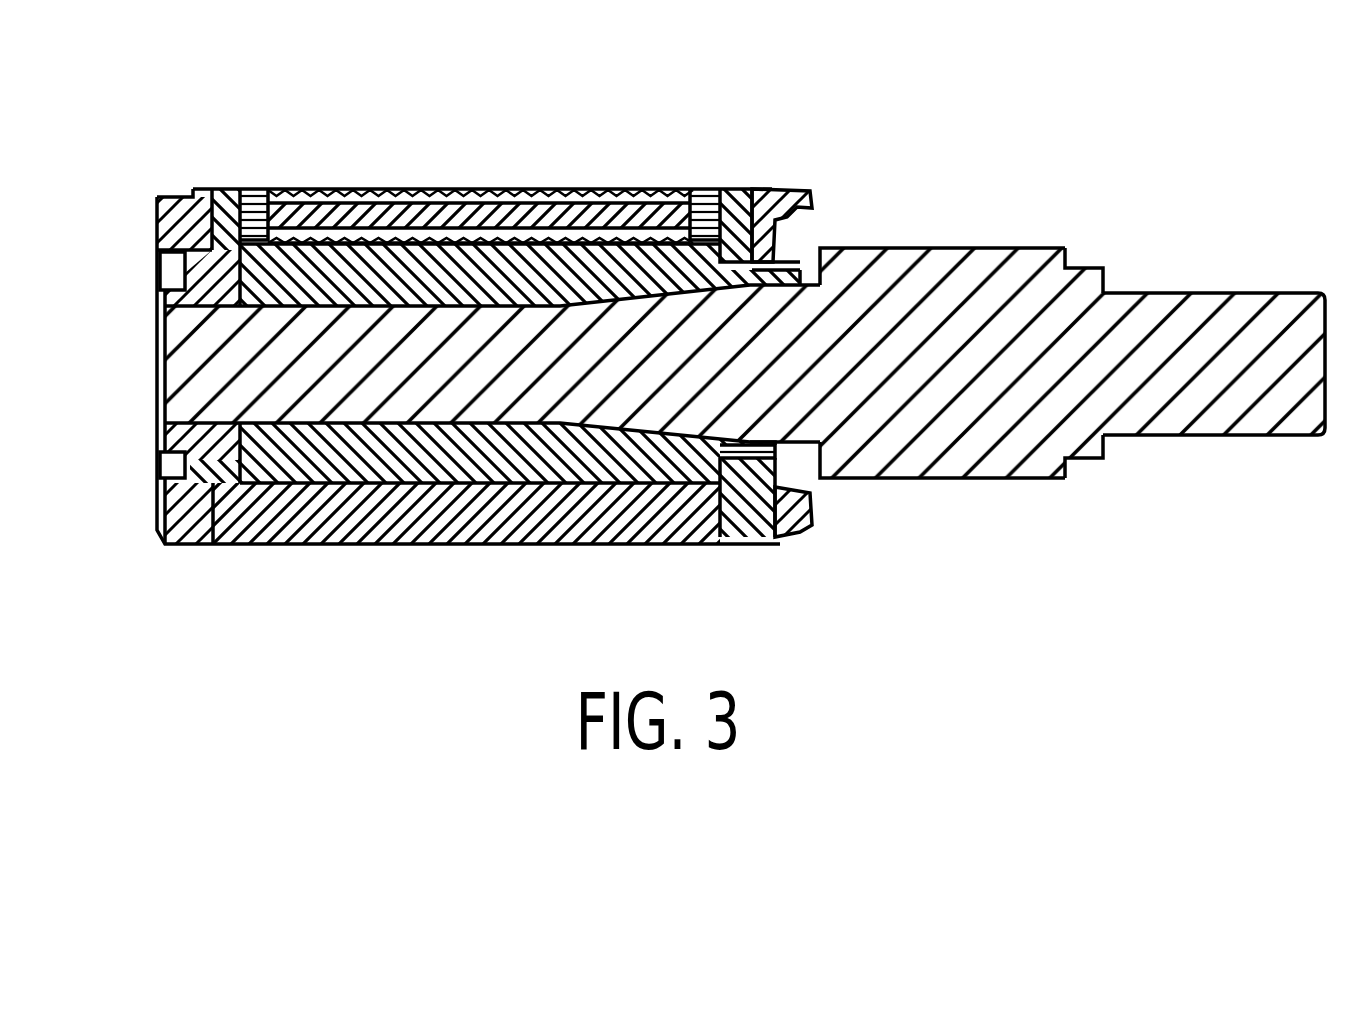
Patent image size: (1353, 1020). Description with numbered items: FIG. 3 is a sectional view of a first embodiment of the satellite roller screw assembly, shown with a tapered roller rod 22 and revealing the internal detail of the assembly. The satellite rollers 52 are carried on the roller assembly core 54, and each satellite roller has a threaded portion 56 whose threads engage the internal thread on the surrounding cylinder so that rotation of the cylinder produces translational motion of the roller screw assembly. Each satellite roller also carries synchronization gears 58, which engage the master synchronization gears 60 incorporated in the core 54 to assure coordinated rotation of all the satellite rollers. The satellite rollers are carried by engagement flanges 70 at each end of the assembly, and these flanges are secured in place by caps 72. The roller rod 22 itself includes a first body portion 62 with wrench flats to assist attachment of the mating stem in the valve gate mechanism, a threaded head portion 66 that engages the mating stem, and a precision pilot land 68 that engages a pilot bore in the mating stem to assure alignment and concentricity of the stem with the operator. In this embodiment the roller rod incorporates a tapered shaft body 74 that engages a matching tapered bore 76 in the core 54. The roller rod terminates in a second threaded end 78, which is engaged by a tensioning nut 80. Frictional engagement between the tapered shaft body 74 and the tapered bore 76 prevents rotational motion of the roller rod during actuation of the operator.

The roller rod 22 is at (999, 248).
The satellite rollers 52 is at (479, 189).
The roller assembly core 54 is at (385, 265).
The threaded portion 56 is at (573, 188).
The synchronization gears 58 is at (707, 188).
The master synchronization gears 60 is at (323, 188).
The first body portion 62 is at (903, 247).
The threaded head portion 66 is at (1210, 293).
The precision pilot land 68 is at (1073, 267).
The engagement flanges 70 is at (733, 188).
The caps 72 is at (802, 522).
The tapered shaft body 74 is at (648, 387).
The tapered bore 76 is at (645, 385).
The second threaded end 78 is at (185, 405).
The tensioning nut 80 is at (180, 295).